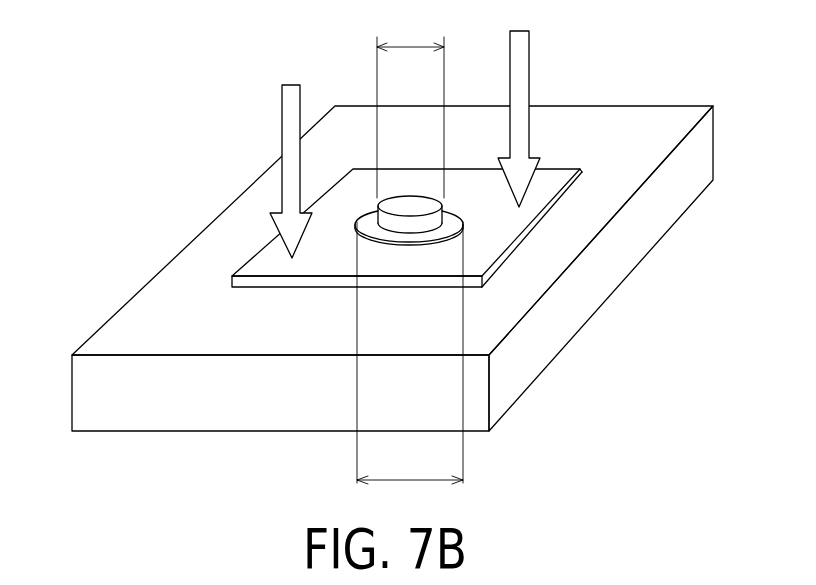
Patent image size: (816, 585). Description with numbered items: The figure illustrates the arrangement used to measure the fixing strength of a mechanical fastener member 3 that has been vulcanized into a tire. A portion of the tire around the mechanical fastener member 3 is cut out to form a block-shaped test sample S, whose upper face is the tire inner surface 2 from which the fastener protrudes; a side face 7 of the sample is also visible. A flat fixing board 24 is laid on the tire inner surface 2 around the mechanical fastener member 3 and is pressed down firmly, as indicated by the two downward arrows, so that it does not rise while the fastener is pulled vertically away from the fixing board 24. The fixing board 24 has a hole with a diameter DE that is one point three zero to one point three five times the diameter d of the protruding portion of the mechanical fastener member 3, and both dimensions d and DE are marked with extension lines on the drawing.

The tire inner surface 2 is at (394, 219).
The mechanical fastener member 3 is at (407, 207).
The side face of base block 7 is at (602, 295).
The fixing board 24 is at (555, 180).
The test sample S is at (232, 220).
The diameter of the protruding portion of the mechanical fastener d is at (410, 108).
The diameter of the hole in the fixing board DE is at (410, 353).